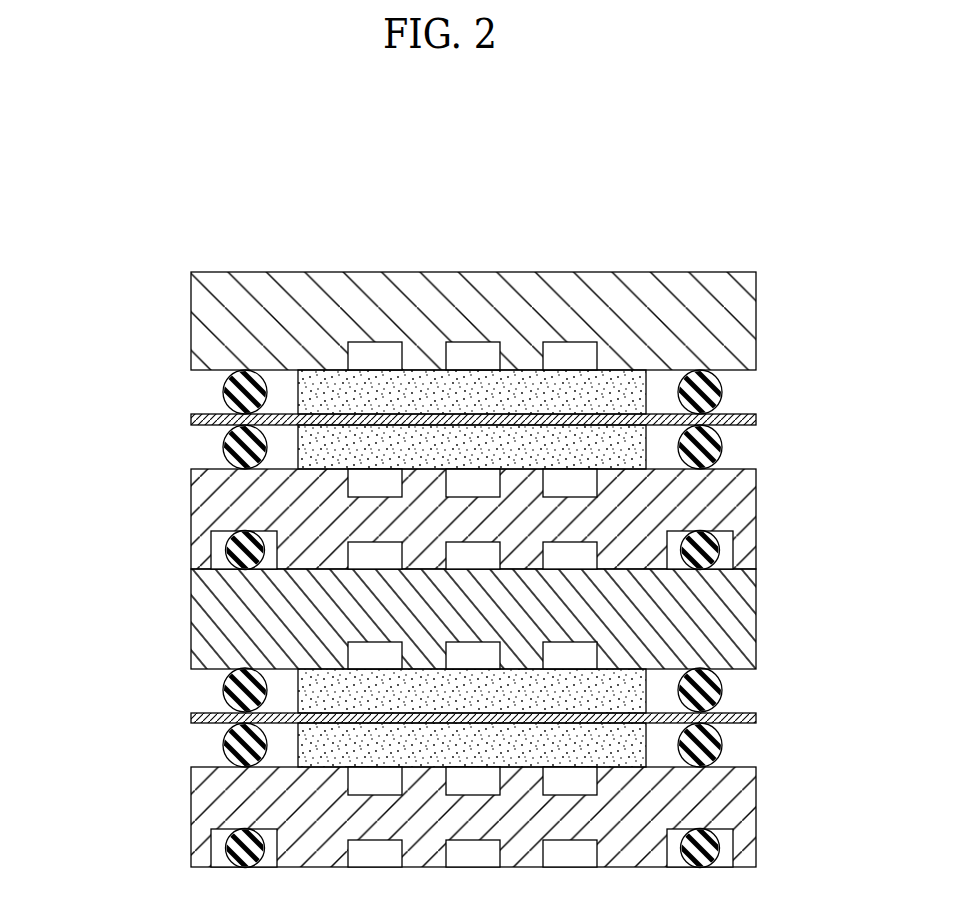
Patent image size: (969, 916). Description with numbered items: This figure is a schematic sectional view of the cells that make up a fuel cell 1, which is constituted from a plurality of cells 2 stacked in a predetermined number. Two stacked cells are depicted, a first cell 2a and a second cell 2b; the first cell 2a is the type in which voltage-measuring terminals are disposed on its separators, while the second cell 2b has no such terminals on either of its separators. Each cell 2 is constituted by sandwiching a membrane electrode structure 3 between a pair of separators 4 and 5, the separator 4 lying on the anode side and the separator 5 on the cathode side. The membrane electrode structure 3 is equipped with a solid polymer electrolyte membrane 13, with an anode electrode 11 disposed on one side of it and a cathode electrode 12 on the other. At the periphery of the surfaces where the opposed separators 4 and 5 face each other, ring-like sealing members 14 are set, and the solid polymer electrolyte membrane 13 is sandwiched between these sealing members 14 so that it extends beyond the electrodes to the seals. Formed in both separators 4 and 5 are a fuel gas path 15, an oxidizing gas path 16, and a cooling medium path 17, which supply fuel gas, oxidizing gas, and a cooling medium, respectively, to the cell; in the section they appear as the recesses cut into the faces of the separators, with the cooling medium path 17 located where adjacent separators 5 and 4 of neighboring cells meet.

The fuel cell 1 is at (782, 186).
The cell 2 is at (442, 549).
The first cell 2a is at (116, 278).
The second cell 2b is at (116, 574).
The membrane electrode structure 3 is at (828, 360).
The separator 4 is at (218, 294).
The separator 5 is at (200, 513).
The anode electrode 11 is at (420, 392).
The cathode electrode 12 is at (613, 440).
The solid polymer electrolyte membrane 13 is at (191, 420).
The sealing member 14 is at (224, 390).
The fuel gas path 15 is at (370, 352).
The oxidizing gas path 16 is at (356, 478).
The cooling medium path 17 is at (446, 556).